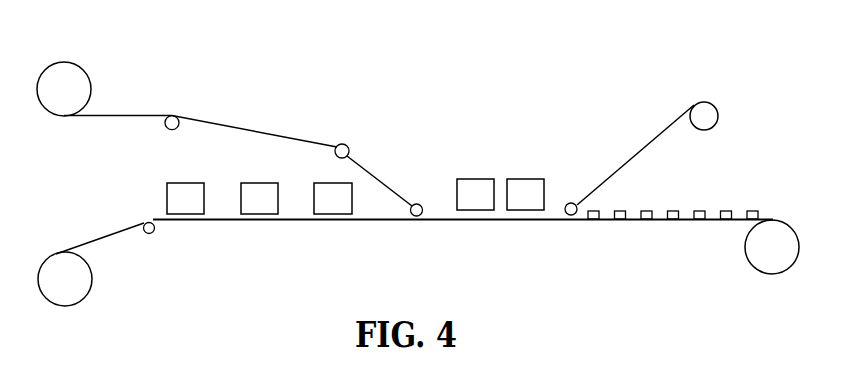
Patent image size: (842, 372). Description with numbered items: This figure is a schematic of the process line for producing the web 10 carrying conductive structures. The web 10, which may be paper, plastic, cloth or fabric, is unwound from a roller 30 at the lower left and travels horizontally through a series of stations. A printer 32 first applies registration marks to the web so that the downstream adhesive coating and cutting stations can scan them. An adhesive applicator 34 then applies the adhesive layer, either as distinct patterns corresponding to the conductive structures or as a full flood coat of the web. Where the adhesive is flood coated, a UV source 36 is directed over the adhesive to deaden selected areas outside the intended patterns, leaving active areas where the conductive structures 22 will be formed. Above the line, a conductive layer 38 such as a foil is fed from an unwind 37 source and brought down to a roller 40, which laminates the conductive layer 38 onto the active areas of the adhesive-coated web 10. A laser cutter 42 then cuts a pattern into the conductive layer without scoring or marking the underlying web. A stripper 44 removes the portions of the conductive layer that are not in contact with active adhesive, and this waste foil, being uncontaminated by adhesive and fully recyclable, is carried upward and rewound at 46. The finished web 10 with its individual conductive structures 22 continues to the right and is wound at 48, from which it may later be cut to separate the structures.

The web 10 is at (106, 237).
The conductive structures 22 is at (646, 211).
The roller 30 is at (67, 307).
The printer 32 is at (186, 183).
The adhesive applicator 34 is at (261, 183).
The UV source 36 is at (334, 183).
The unwind source 37 is at (63, 62).
The conductive layer 38 is at (125, 115).
The roller 40 is at (418, 204).
The laser cutter 42 is at (473, 179).
The stripper 44 is at (524, 179).
The rewind 46 is at (718, 113).
The wind-up 48 is at (770, 274).